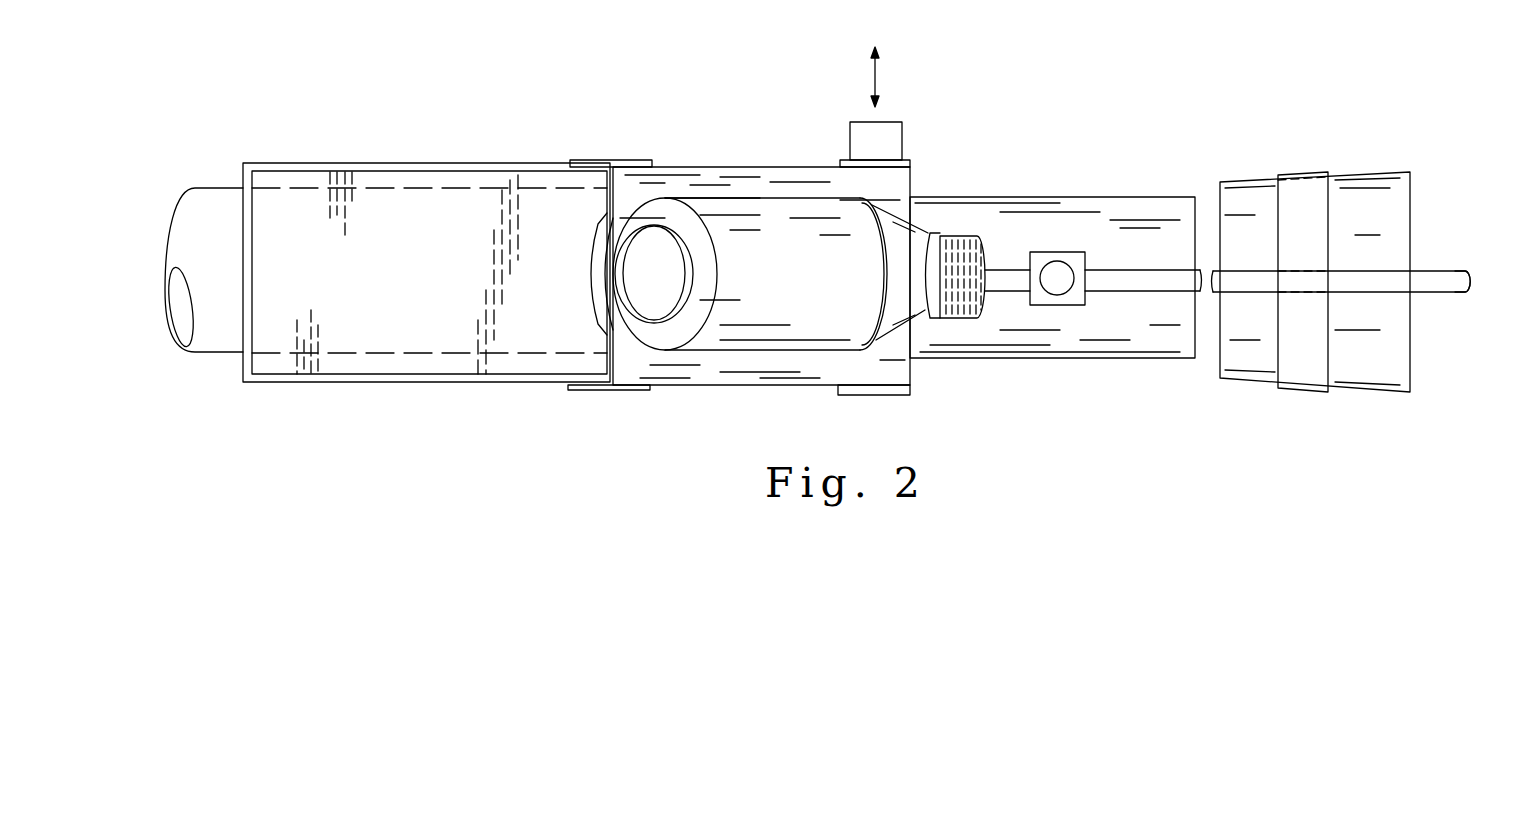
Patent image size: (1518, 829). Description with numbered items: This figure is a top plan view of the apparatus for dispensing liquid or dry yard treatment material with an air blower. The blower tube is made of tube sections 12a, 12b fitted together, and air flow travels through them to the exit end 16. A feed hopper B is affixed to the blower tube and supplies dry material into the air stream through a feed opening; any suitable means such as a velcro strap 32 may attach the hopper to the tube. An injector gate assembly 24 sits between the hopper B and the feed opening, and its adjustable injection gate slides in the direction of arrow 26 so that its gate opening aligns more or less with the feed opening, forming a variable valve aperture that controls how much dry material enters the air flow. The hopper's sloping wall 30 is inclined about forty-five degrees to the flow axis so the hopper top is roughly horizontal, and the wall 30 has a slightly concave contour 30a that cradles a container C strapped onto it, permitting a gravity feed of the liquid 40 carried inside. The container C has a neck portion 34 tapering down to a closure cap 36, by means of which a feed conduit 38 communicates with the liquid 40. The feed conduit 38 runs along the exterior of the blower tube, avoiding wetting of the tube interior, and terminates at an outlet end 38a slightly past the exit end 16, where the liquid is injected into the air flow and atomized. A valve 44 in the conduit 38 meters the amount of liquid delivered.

The sloped wall 30 is at (402, 163).
The concave contour 30a is at (604, 251).
The velcro strap 32 is at (620, 392).
The feed hopper B is at (775, 170).
The container C is at (731, 197).
The liquid 40 is at (760, 288).
The neck portion 34 is at (890, 328).
The closure cap 36 is at (943, 232).
The injector gate assembly 24 is at (892, 112).
The arrow 26 is at (872, 75).
The feed conduit 38 is at (1002, 268).
The outlet end 38a is at (1478, 267).
The valve 44 is at (1061, 261).
The tube section 12a is at (1107, 360).
The tube section 12b is at (1352, 173).
The exit end 16 is at (1413, 365).